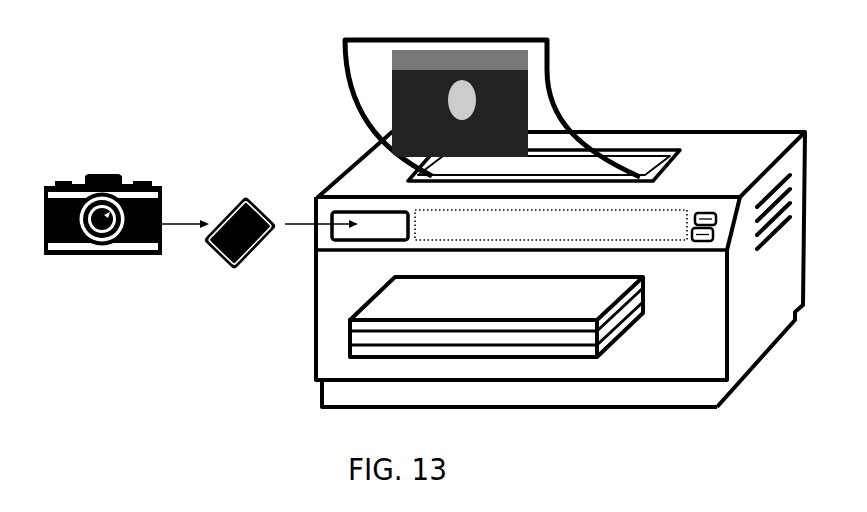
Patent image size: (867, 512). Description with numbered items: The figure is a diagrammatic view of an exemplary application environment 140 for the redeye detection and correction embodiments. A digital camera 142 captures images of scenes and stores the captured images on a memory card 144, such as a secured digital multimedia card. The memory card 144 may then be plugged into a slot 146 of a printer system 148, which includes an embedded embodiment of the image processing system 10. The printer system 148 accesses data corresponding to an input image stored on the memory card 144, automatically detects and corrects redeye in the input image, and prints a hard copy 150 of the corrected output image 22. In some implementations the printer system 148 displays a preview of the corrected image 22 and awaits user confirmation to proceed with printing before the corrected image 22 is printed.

The application environment 140 is at (95, 112).
The digital camera 142 is at (105, 255).
The memory card 144 is at (240, 202).
The slot 146 is at (380, 228).
The printer system 148 is at (723, 130).
The hard copy 150 is at (500, 17).
The corrected output image 22 is at (392, 70).
The image processing system 10 is at (664, 240).